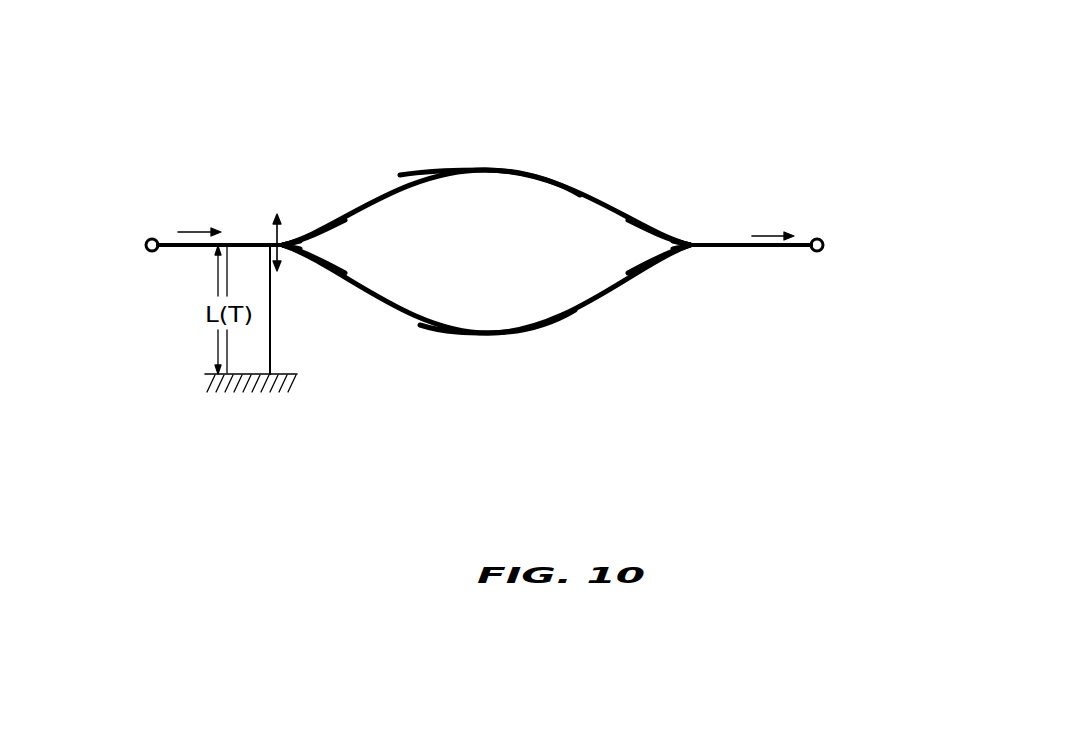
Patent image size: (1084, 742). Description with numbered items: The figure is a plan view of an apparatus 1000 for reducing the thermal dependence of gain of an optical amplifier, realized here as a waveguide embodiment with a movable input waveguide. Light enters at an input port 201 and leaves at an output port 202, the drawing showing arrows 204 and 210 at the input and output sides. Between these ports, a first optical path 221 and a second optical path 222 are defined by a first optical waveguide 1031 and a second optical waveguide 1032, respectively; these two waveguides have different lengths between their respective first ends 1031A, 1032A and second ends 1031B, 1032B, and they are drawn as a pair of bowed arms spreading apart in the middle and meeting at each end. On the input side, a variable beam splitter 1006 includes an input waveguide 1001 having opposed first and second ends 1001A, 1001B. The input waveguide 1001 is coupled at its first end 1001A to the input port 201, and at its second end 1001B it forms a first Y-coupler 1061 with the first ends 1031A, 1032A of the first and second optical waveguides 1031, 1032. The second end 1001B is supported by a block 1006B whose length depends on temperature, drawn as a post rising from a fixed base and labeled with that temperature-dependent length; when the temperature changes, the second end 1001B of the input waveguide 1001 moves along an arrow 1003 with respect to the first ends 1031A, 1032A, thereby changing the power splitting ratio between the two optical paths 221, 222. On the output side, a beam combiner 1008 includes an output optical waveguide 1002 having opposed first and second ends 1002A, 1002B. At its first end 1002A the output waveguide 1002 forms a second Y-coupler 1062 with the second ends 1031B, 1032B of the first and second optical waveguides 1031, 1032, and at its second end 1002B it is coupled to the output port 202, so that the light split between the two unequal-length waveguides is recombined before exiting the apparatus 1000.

The apparatus 1000 is at (748, 32).
The input port 201 is at (147, 238).
The output port 202 is at (822, 240).
The input displacement arrow 204 is at (200, 229).
The output displacement arrow 210 is at (770, 232).
The first optical path 221 is at (535, 351).
The second optical path 222 is at (553, 168).
The input waveguide 1001 is at (200, 248).
The first end of input waveguide 1001A is at (162, 258).
The second end of input waveguide 1001B is at (265, 234).
The output optical waveguide 1002 is at (747, 250).
The first end of output optical waveguide 1002A is at (710, 237).
The second end of output optical waveguide 1002B is at (800, 257).
The arrow 1003 is at (286, 232).
The variable beam splitter 1006 is at (380, 413).
The block 1006B is at (272, 345).
The beam combiner 1008 is at (807, 362).
The first optical waveguide 1031 is at (477, 335).
The first end of first optical waveguide 1031A is at (292, 263).
The second end of first optical waveguide 1031B is at (680, 258).
The second optical waveguide 1032 is at (490, 170).
The first end of second optical waveguide 1032A is at (299, 229).
The second end of second optical waveguide 1032B is at (683, 224).
The first Y-coupler 1061 is at (341, 248).
The second Y-coupler 1062 is at (620, 243).